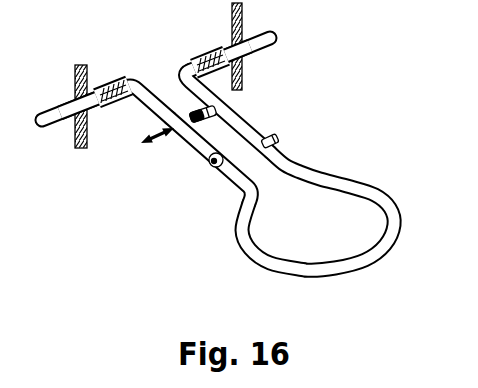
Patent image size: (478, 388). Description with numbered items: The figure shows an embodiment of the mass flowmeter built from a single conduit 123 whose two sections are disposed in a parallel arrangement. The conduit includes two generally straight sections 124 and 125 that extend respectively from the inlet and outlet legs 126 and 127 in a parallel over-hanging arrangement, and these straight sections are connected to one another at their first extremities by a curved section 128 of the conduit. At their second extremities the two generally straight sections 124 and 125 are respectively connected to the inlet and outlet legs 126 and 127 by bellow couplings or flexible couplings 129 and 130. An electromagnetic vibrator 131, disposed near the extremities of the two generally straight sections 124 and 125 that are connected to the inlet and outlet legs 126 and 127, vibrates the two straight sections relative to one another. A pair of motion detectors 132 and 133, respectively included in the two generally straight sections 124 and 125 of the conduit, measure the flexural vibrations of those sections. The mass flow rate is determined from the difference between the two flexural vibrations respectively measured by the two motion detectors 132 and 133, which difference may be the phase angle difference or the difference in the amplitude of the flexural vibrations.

The conduit 123 is at (233, 233).
The generally straight section 124 is at (239, 176).
The generally straight section 125 is at (296, 158).
The inlet leg 126 is at (110, 81).
The outlet leg 127 is at (210, 66).
The curved section 128 is at (343, 268).
The flexible coupling 129 is at (113, 112).
The flexible coupling 130 is at (213, 82).
The electromagnetic vibrator 131 is at (200, 147).
The motion detector 132 is at (194, 167).
The motion detector 133 is at (274, 141).